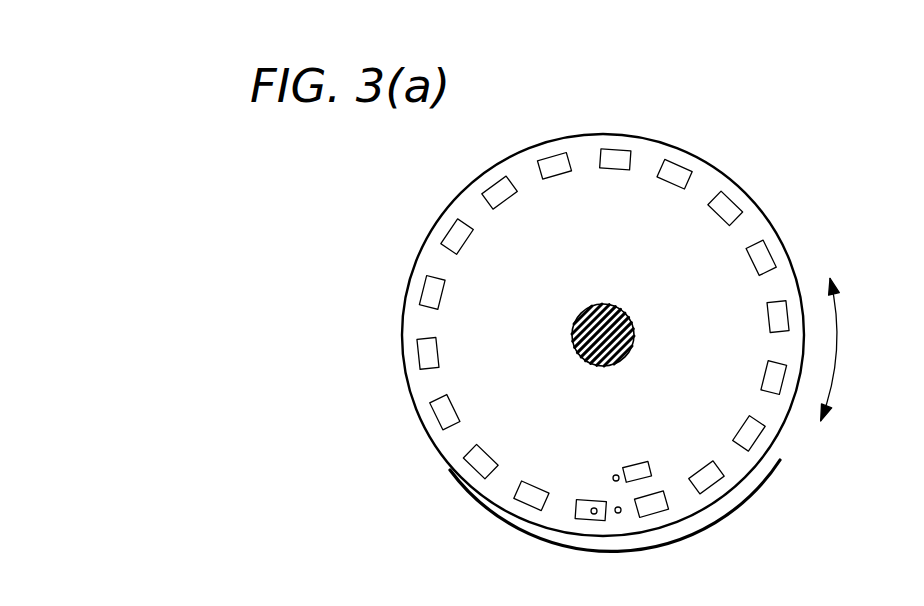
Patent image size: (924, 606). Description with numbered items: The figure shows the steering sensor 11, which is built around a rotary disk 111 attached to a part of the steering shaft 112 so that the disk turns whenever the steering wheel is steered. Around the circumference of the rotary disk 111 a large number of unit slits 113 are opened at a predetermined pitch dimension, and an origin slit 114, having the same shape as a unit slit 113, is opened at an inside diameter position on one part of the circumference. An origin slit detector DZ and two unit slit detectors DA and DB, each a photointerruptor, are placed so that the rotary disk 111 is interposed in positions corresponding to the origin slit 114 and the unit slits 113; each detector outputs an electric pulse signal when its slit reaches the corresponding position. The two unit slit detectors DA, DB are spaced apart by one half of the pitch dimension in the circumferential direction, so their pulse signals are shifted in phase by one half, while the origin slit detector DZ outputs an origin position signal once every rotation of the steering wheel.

The steering sensor 11 is at (687, 135).
The rotary disk 111 is at (730, 190).
The steering shaft 112 is at (582, 323).
The unit slits 113 is at (707, 478).
The origin slit 114 is at (643, 472).
The origin slit detector DZ is at (612, 478).
The unit slit detector DB is at (587, 518).
The unit slit detector DA is at (620, 514).